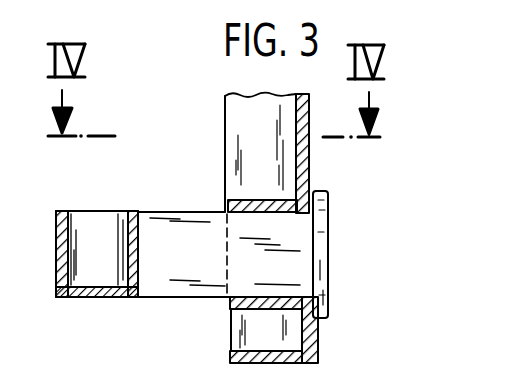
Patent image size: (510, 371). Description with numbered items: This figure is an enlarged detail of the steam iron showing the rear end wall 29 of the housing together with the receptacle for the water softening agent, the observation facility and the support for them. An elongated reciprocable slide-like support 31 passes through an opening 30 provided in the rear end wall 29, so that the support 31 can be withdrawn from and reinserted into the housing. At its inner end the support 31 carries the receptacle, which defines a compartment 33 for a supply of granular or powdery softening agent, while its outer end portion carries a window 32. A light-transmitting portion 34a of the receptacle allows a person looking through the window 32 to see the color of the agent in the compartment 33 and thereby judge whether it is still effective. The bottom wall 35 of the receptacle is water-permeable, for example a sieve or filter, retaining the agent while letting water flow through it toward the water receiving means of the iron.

The rear end wall 29 is at (312, 160).
The opening 30 is at (279, 309).
The support 31 is at (180, 302).
The window 32 is at (331, 252).
The compartment 33 is at (92, 246).
The portion of the receptacle 34a is at (139, 240).
The bottom wall 35 is at (102, 301).